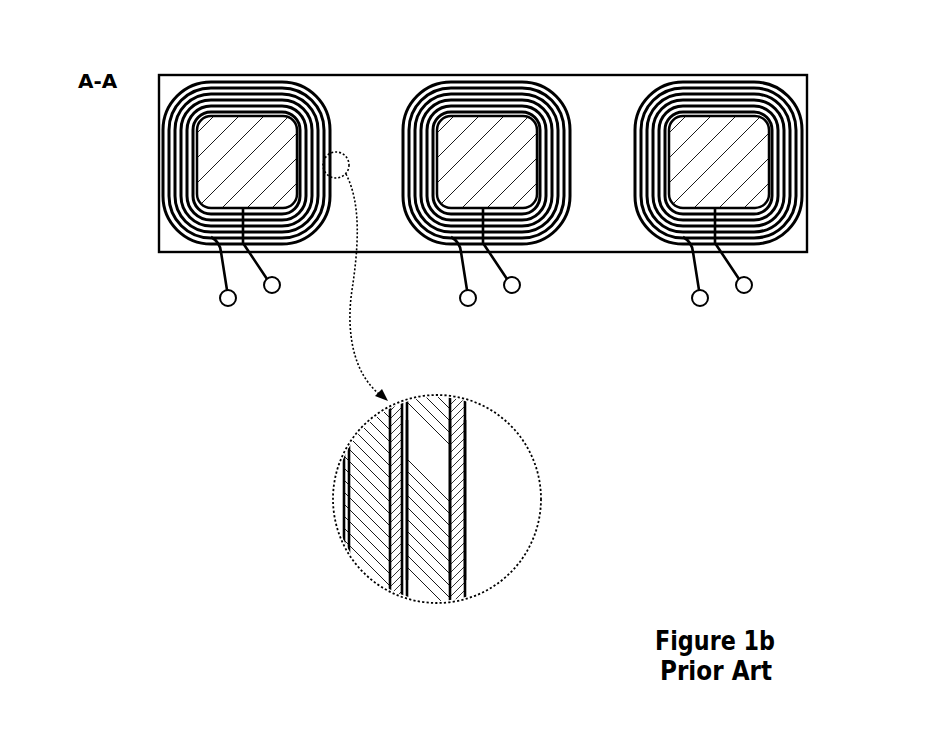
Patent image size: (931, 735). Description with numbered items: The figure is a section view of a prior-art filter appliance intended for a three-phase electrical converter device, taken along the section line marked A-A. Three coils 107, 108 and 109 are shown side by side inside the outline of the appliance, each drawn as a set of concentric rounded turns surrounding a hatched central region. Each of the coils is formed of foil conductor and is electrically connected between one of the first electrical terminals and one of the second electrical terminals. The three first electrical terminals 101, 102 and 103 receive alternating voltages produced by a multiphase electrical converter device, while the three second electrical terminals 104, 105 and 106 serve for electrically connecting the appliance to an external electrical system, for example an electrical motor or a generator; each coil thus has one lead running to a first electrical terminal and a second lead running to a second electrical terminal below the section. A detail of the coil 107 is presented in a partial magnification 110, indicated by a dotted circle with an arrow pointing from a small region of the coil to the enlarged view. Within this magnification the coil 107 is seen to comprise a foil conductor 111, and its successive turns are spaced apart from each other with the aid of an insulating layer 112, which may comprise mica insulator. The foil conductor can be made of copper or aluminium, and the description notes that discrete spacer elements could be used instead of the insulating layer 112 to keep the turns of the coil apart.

The first electrical terminal 101 is at (222, 305).
The first electrical terminal 102 is at (434, 290).
The first electrical terminal 103 is at (666, 288).
The second electrical terminal 104 is at (271, 293).
The second electrical terminal 105 is at (519, 286).
The second electrical terminal 106 is at (751, 285).
The coil 107 is at (311, 94).
The coil 108 is at (483, 132).
The coil 109 is at (715, 131).
The partial magnification 110 is at (543, 503).
The foil conductor 111 is at (457, 437).
The insulating layer 112 is at (430, 404).